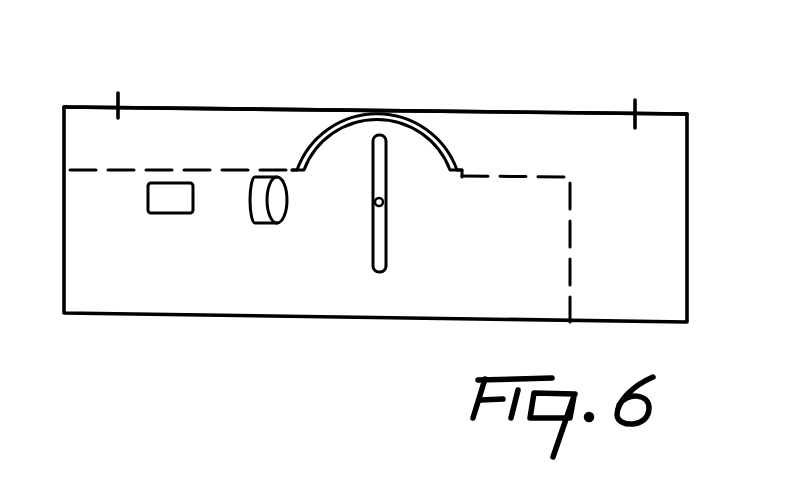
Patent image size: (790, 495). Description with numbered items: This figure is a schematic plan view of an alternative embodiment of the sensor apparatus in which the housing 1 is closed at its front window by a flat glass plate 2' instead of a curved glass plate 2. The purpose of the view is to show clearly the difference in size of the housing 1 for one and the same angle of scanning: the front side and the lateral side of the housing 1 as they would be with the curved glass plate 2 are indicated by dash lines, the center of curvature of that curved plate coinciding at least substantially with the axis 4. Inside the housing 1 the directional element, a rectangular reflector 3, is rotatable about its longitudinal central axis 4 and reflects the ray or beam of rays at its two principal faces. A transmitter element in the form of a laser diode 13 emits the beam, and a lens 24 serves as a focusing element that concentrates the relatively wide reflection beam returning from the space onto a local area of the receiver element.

The housing 1 is at (178, 321).
The glass plate 2 is at (403, 145).
The flat glass plate 2' is at (375, 79).
The reflector 3 is at (370, 250).
The longitudinal central axis 4 is at (386, 200).
The laser diode 13 is at (175, 213).
The lens 24 is at (252, 216).